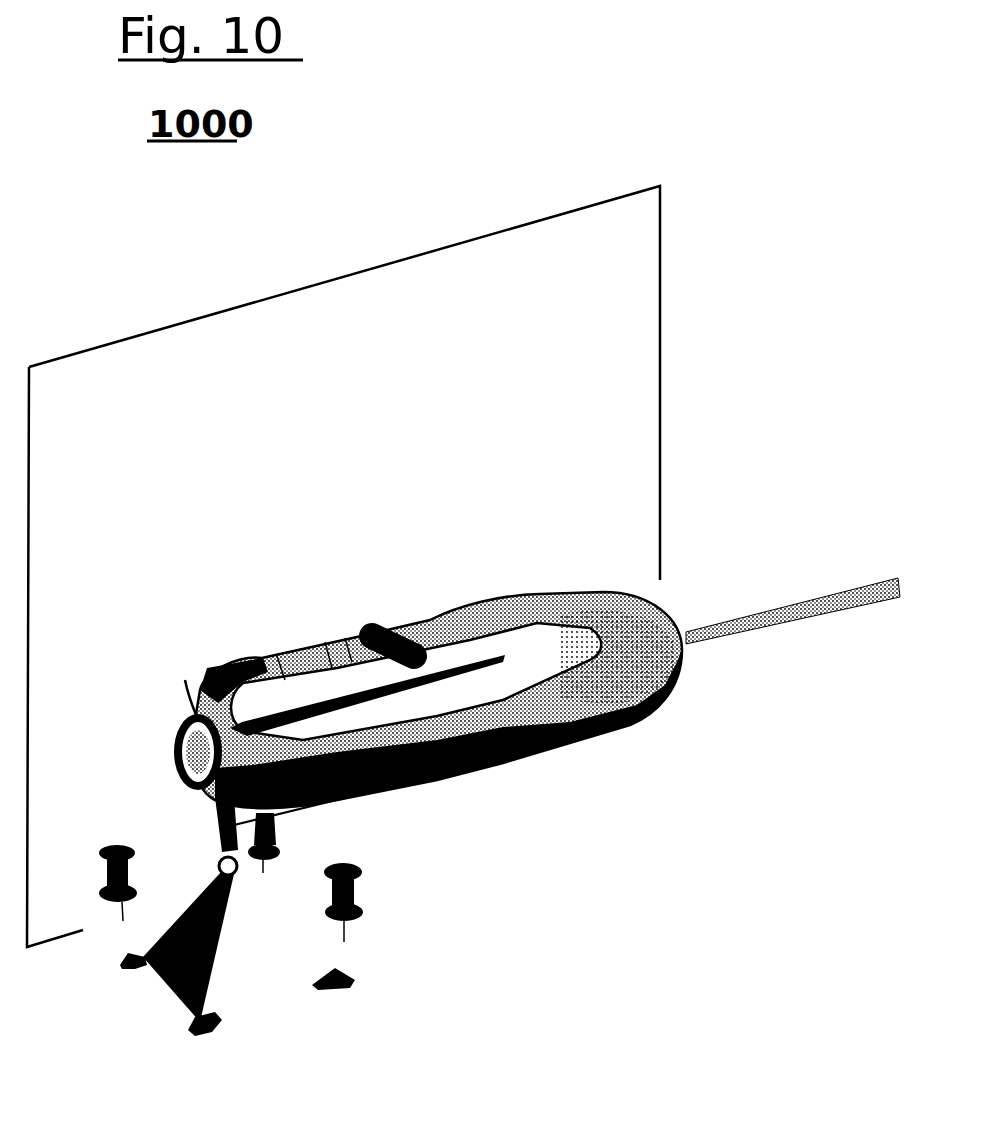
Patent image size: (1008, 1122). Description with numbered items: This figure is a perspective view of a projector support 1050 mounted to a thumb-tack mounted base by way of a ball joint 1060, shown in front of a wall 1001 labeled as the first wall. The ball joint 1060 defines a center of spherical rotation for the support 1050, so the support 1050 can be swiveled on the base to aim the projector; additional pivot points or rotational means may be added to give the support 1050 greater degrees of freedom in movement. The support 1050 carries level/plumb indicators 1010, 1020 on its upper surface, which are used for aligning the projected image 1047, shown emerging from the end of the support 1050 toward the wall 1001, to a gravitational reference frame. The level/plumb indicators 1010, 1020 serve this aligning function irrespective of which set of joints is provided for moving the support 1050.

The wall 1001 is at (471, 240).
The level/plumb indicator 1010 is at (352, 612).
The level/plumb indicator 1020 is at (297, 641).
The projected image 1047 is at (800, 628).
The projector support 1050 is at (523, 770).
The ball joint 1060 is at (200, 855).